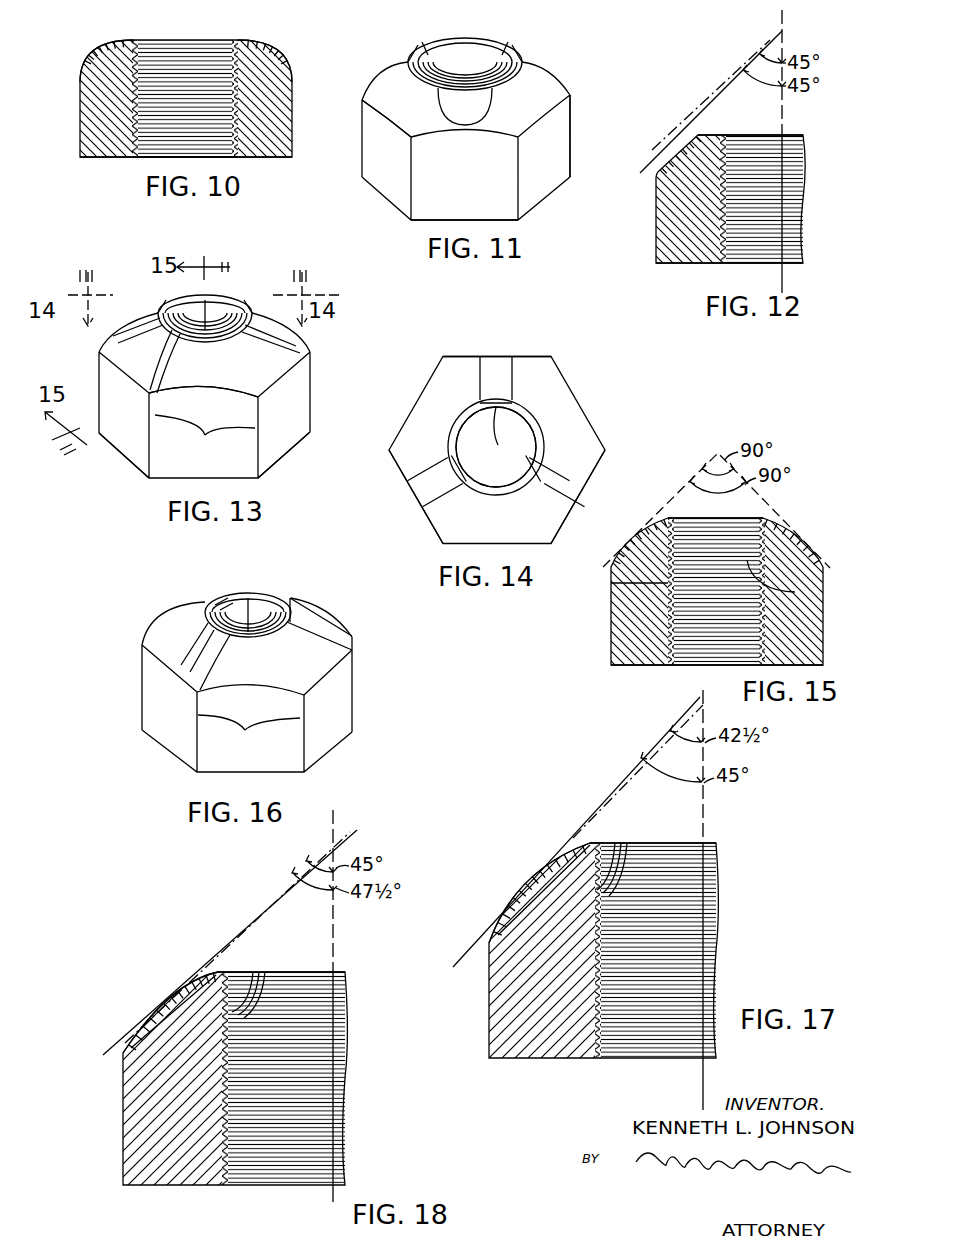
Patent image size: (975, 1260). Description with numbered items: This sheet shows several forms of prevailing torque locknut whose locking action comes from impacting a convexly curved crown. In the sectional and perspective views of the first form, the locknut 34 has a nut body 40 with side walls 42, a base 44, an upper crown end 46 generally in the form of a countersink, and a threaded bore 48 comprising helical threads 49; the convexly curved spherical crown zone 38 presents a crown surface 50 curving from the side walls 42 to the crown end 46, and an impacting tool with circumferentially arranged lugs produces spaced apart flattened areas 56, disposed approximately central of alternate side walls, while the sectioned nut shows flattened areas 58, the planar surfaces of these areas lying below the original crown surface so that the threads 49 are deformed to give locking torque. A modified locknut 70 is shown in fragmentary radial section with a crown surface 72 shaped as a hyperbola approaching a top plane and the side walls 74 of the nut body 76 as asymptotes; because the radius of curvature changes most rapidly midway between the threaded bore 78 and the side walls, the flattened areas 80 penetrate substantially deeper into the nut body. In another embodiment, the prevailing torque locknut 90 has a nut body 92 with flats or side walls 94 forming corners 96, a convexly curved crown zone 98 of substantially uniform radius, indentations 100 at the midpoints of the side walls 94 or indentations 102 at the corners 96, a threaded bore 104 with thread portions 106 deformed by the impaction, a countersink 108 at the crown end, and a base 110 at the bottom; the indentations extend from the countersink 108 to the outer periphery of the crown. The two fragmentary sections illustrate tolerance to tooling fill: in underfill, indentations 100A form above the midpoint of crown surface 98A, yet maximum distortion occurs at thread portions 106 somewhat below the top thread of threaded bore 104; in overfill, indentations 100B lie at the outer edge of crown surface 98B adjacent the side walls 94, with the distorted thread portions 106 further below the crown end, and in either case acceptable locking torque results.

In FIG. 11, the locknut 34 is at (586, 138).
In FIG. 11, the crown zone 38 is at (380, 102).
In FIG. 10, the nut body 40 is at (80, 118).
In FIG. 11, the nut body 40 is at (517, 157).
In FIG. 10, the side walls 42 is at (290, 120).
In FIG. 11, the side walls 42 is at (418, 220).
In FIG. 10, the base 44 is at (258, 158).
In FIG. 10, the crown end 46 is at (136, 44).
In FIG. 11, the crown end 46 is at (458, 40).
In FIG. 10, the threaded bore 48 is at (132, 150).
In FIG. 10, the helical threads 49 is at (206, 65).
In FIG. 10, the crown surface 50 is at (84, 72).
In FIG. 11, the crown surface 50 is at (377, 80).
In FIG. 11, the flattened areas 56 is at (410, 54).
In FIG. 10, the flattened areas 58 is at (100, 56).
In FIG. 12, the locknut 70 is at (790, 132).
In FIG. 12, the crown surface 72 is at (700, 136).
In FIG. 12, the side walls 74 is at (658, 250).
In FIG. 12, the nut body 76 is at (660, 214).
In FIG. 12, the threaded bore 78 is at (788, 230).
In FIG. 12, the flattened areas 80 is at (672, 152).
In FIG. 13, the prevailing torque locknut 90 is at (308, 388).
In FIG. 15, the nut body 92 is at (625, 646).
In FIG. 17, the nut body 92 is at (505, 1030).
In FIG. 18, the nut body 92 is at (133, 1146).
In FIG. 13, the side walls 94 is at (138, 462).
In FIG. 14, the side walls 94 is at (444, 357).
In FIG. 15, the side walls 94 is at (611, 614).
In FIG. 16, the side walls 94 is at (190, 765).
In FIG. 17, the side walls 94 is at (489, 992).
In FIG. 18, the side walls 94 is at (123, 1100).
In FIG. 13, the corners 96 is at (203, 423).
In FIG. 14, the corners 96 is at (550, 356).
In FIG. 16, the corners 96 is at (354, 678).
In FIG. 14, the crown zone 98 is at (410, 462).
In FIG. 15, the crown zone 98 is at (770, 522).
In FIG. 16, the crown zone 98 is at (180, 615).
In FIG. 17, the crown surface 98A is at (510, 905).
In FIG. 18, the crown surface 98B is at (206, 976).
In FIG. 13, the indentations 100 is at (115, 342).
In FIG. 14, the indentations 100 is at (492, 368).
In FIG. 15, the indentations 100 is at (632, 548).
In FIG. 17, the indentations 100A is at (550, 886).
In FIG. 18, the indentations 100B is at (150, 1020).
In FIG. 16, the indentations 102 is at (200, 662).
In FIG. 13, the threaded bore 104 is at (181, 311).
In FIG. 14, the threaded bore 104 is at (458, 425).
In FIG. 15, the threaded bore 104 is at (683, 640).
In FIG. 16, the threaded bore 104 is at (265, 615).
In FIG. 17, the threaded bore 104 is at (600, 995).
In FIG. 18, the threaded bore 104 is at (240, 1122).
In FIG. 13, the thread portions 106 is at (203, 330).
In FIG. 14, the thread portions 106 is at (470, 462).
In FIG. 15, the thread portions 106 is at (611, 583).
In FIG. 16, the thread portions 106 is at (230, 605).
In FIG. 17, the thread portions 106 is at (621, 857).
In FIG. 18, the thread portions 106 is at (260, 981).
In FIG. 13, the countersink 108 is at (240, 287).
In FIG. 14, the countersink 108 is at (540, 422).
In FIG. 15, the countersink 108 is at (668, 522).
In FIG. 16, the countersink 108 is at (256, 598).
In FIG. 17, the countersink 108 is at (674, 852).
In FIG. 18, the countersink 108 is at (317, 980).
In FIG. 15, the base 110 is at (640, 666).